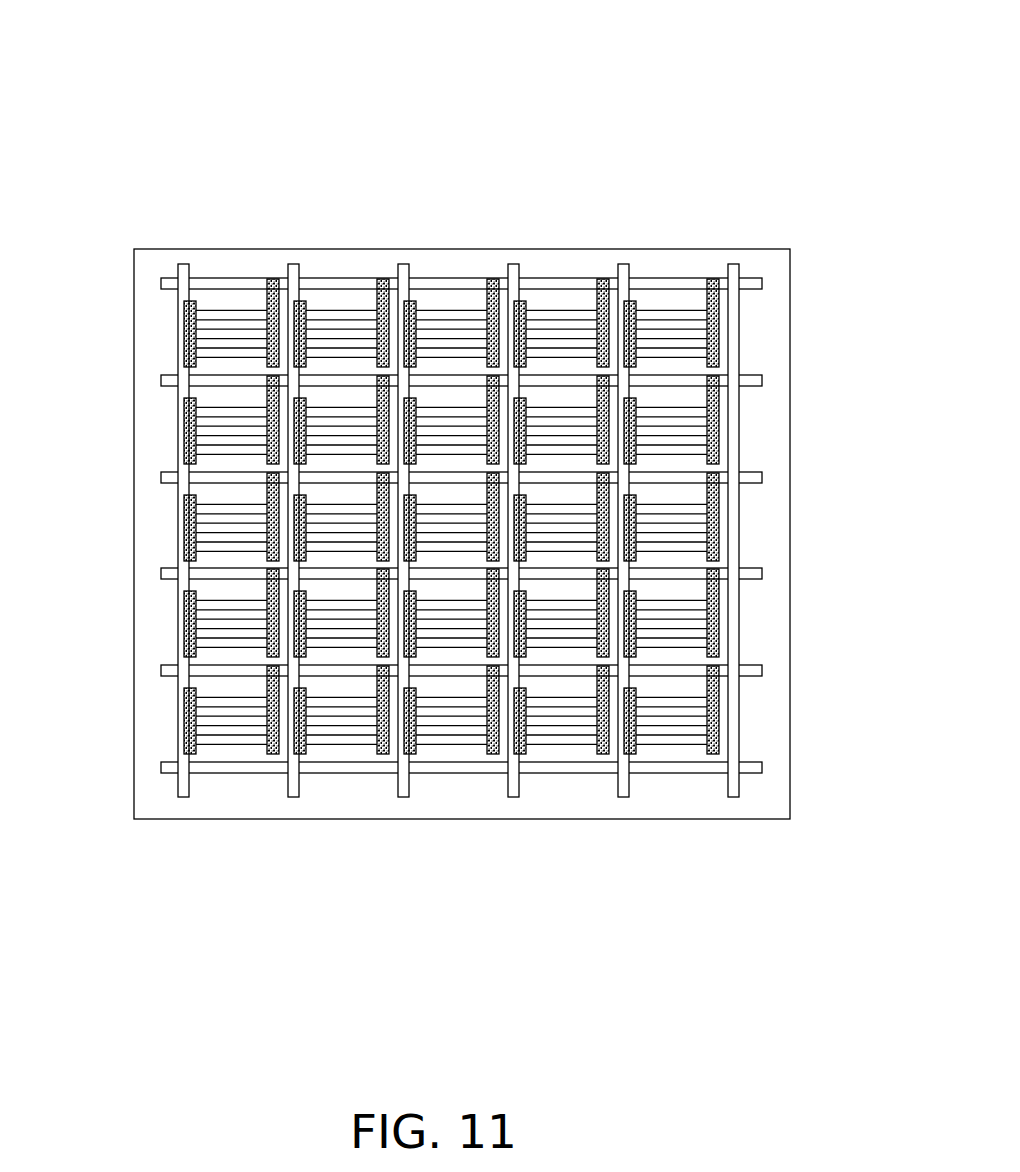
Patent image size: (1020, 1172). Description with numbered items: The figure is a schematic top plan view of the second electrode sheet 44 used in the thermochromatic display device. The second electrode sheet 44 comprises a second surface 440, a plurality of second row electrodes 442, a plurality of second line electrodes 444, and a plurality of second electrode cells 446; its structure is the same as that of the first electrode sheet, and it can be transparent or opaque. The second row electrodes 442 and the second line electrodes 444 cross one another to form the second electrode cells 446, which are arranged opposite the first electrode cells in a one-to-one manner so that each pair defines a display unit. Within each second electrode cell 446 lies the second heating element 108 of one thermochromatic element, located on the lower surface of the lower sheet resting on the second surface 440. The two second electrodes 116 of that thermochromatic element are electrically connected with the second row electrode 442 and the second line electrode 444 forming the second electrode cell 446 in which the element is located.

The second electrode sheet 44 is at (462, 83).
The second heating element 108 is at (332, 302).
The second electrodes 116 is at (273, 278).
The second surface 440 is at (467, 257).
The second row electrodes 442 is at (755, 378).
The second line electrodes 444 is at (733, 316).
The second electrode cells 446 is at (673, 295).